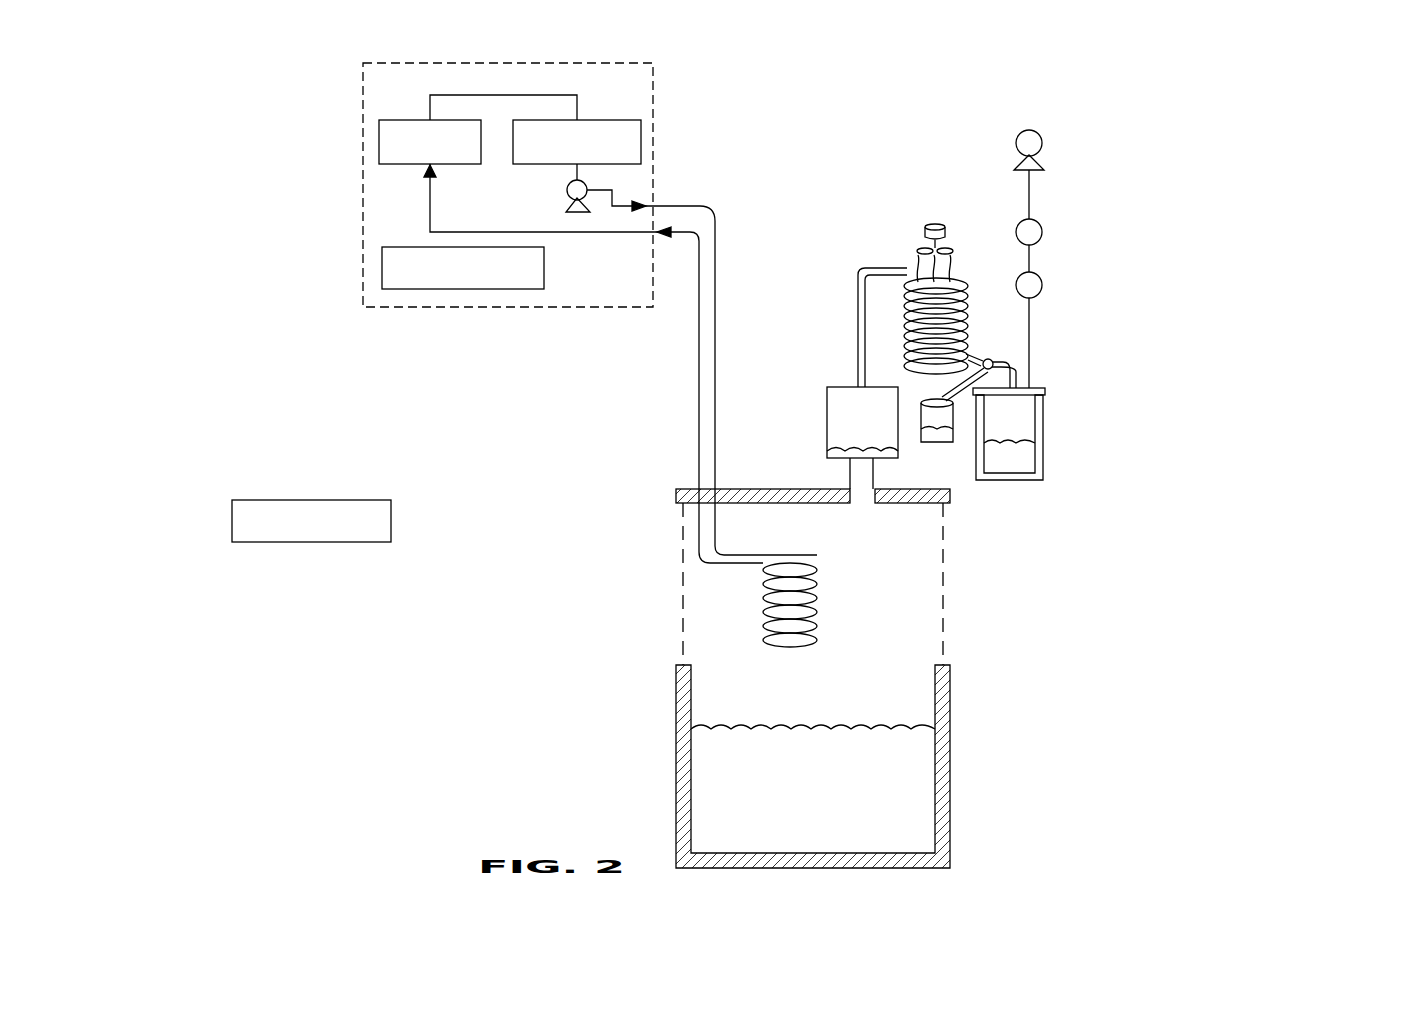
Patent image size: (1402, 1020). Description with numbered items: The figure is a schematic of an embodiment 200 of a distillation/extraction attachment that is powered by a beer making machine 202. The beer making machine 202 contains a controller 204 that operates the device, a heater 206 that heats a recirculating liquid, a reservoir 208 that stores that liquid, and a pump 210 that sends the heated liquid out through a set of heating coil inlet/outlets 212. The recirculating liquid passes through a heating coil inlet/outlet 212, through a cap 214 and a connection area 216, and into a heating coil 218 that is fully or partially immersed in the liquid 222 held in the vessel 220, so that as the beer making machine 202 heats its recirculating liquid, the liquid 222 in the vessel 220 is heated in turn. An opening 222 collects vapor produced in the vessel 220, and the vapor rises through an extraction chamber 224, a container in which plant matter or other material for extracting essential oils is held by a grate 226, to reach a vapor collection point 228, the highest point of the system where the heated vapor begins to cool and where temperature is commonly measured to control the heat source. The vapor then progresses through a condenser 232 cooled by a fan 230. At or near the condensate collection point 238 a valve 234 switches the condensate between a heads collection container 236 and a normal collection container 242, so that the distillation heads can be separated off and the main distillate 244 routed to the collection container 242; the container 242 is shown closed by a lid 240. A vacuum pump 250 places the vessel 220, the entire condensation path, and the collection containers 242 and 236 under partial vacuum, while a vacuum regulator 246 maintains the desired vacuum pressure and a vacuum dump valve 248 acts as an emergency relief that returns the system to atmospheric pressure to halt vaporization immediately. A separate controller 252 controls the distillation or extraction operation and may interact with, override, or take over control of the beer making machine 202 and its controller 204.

The embodiment 200 is at (310, 658).
The beer making machine 202 is at (366, 307).
The controller 204 is at (382, 268).
The heater 206 is at (379, 138).
The reservoir 208 is at (641, 128).
The pump 210 is at (567, 190).
The heating coil inlet/outlet 212 is at (712, 262).
The cap 214 is at (676, 488).
The connection area 216 is at (680, 565).
The heating coil 218 is at (822, 620).
The vessel 220 is at (950, 772).
The liquid / opening 222 is at (862, 504).
The extraction chamber 224 is at (827, 408).
The grate 226 is at (831, 451).
The vapor collection point 228 is at (857, 271).
The fan 230 is at (937, 224).
The condenser 232 is at (913, 284).
The valve 234 is at (990, 357).
The heads collection container 236 is at (945, 442).
The condensate collection point 238 is at (1013, 375).
The lid 240 is at (1045, 392).
The collection container 242 is at (1027, 480).
The distillate 244 is at (1030, 458).
The vacuum regulator 246 is at (1042, 285).
The vacuum dump valve 248 is at (1042, 232).
The vacuum pump 250 is at (1052, 110).
The controller 252 is at (232, 519).